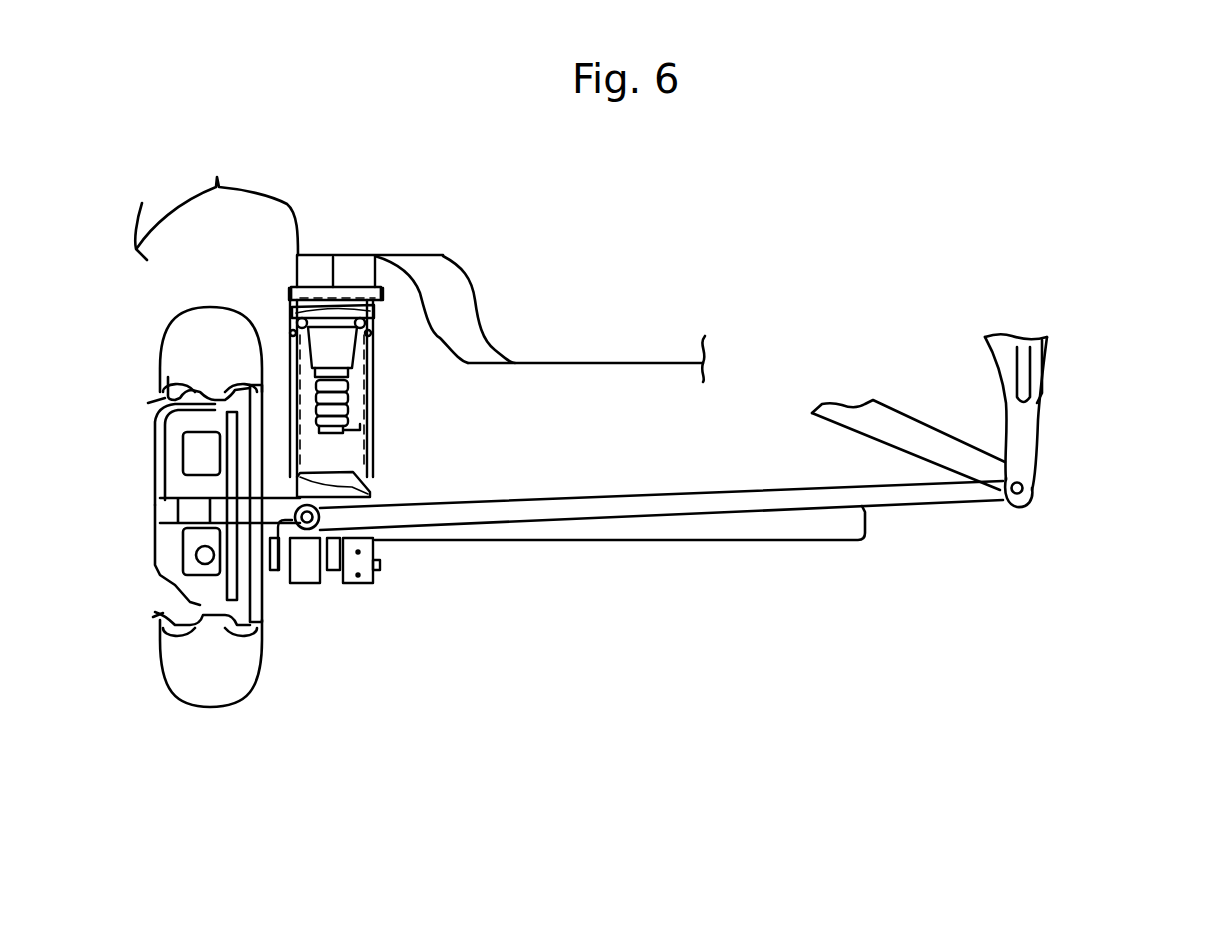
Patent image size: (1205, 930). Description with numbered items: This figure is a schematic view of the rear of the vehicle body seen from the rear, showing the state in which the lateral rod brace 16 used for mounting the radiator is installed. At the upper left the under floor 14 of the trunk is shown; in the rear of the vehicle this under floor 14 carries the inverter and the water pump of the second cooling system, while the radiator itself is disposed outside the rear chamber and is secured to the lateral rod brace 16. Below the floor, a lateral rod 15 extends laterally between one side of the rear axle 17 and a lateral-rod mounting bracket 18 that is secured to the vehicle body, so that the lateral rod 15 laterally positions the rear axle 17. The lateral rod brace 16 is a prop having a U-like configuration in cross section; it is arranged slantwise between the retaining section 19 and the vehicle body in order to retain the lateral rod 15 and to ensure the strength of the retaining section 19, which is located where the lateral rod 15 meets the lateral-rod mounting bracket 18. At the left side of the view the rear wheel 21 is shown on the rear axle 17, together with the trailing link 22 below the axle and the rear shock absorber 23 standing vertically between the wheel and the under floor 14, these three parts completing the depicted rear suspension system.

The under floor 14 is at (619, 365).
The lateral rod 15 is at (645, 493).
The lateral rod brace 16 is at (913, 417).
The rear axle 17 is at (658, 543).
The lateral-rod mounting bracket 18 is at (1043, 424).
The retaining section 19 is at (1037, 494).
The rear wheel 21 is at (213, 712).
The trailing link 22 is at (307, 584).
The rear shock absorber 23 is at (358, 403).